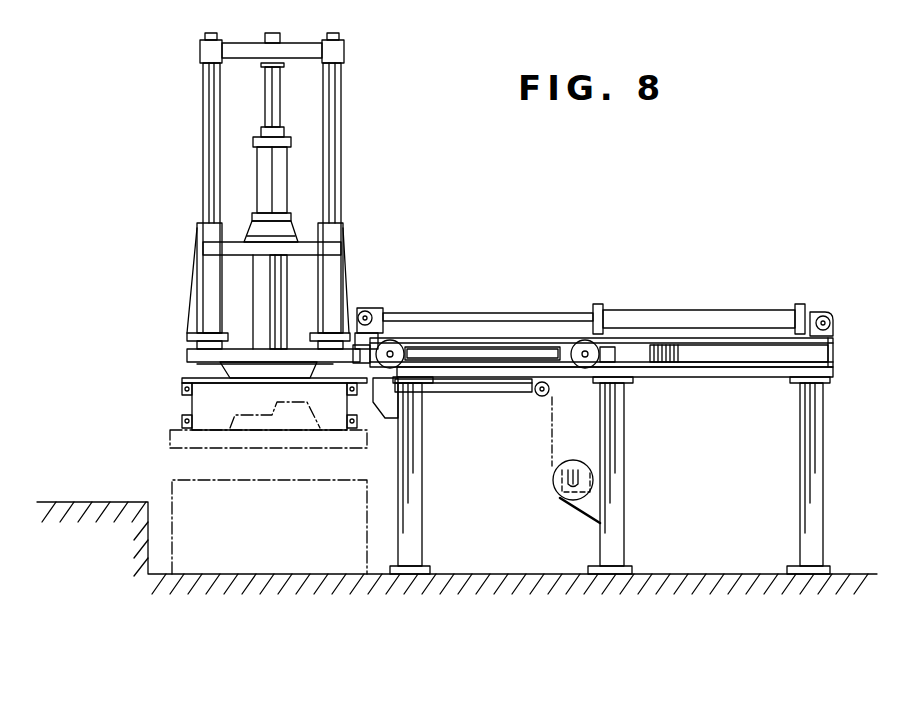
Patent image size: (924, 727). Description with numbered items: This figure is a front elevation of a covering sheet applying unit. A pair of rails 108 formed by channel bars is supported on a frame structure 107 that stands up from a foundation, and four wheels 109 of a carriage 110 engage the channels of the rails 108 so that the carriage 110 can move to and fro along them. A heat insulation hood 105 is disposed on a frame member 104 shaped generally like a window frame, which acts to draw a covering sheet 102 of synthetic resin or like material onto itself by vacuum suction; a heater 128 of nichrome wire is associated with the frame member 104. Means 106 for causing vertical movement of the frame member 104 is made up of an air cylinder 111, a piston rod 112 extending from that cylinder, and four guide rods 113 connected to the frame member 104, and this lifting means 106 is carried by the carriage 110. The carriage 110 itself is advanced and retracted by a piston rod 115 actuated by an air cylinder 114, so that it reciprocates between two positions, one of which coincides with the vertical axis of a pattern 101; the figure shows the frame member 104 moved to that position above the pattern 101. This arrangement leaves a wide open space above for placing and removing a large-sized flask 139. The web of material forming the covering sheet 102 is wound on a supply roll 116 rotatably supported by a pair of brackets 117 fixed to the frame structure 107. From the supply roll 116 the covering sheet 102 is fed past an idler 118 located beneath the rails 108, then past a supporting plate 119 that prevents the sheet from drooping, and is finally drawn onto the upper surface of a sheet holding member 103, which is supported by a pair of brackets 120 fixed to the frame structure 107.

The pattern 101 is at (285, 418).
The covering sheet 102 is at (551, 438).
The sheet holding member 103 is at (352, 388).
The frame member 104 is at (258, 375).
The heat insulation hood 105 is at (195, 303).
The means for causing vertical movement of the frame member 106 is at (147, 80).
The frame structure 107 is at (406, 528).
The rails 108 is at (808, 357).
The wheels 109 is at (403, 345).
The carriage 110 is at (245, 349).
The air cylinder 111 is at (260, 172).
The piston rod 112 is at (267, 107).
The guide rods 113 is at (207, 82).
The air cylinder 114 is at (719, 316).
The piston rod 115 is at (547, 315).
The supply roll 116 is at (574, 461).
The brackets 117 is at (582, 506).
The idler 118 is at (549, 394).
The supporting plate 119 is at (500, 386).
The brackets 120 is at (394, 405).
The heater 128 is at (357, 317).
The flask 139 is at (182, 393).